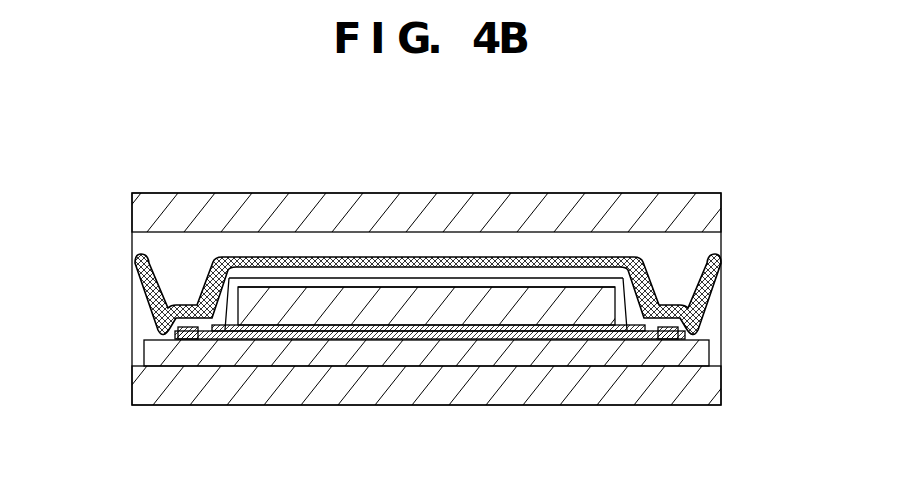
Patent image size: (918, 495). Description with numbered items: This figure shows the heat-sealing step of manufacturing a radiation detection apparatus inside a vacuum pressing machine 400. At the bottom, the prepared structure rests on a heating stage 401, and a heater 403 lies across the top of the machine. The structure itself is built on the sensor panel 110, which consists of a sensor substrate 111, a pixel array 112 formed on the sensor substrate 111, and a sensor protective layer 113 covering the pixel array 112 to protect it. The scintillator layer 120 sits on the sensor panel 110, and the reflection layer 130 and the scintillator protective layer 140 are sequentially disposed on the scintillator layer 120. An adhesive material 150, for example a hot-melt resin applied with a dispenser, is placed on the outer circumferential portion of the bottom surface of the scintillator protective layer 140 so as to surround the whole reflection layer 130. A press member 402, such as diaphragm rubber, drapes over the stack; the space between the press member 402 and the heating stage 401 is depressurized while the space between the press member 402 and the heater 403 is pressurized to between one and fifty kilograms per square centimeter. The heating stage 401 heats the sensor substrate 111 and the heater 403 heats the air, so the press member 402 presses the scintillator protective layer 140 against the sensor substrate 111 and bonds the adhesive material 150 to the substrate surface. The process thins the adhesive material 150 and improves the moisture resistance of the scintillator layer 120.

The vacuum pressing machine 400 is at (228, 174).
The heating stage 401 is at (698, 386).
The press member 402 is at (203, 274).
The heater 403 is at (700, 204).
The sensor panel 110 is at (426, 406).
The sensor substrate 111 is at (484, 352).
The pixel array 112 is at (531, 338).
The sensor protective layer 113 is at (587, 328).
The scintillator layer 120 is at (643, 303).
The reflection layer 130 is at (567, 288).
The scintillator protective layer 140 is at (518, 273).
The adhesive material 150 is at (152, 332).